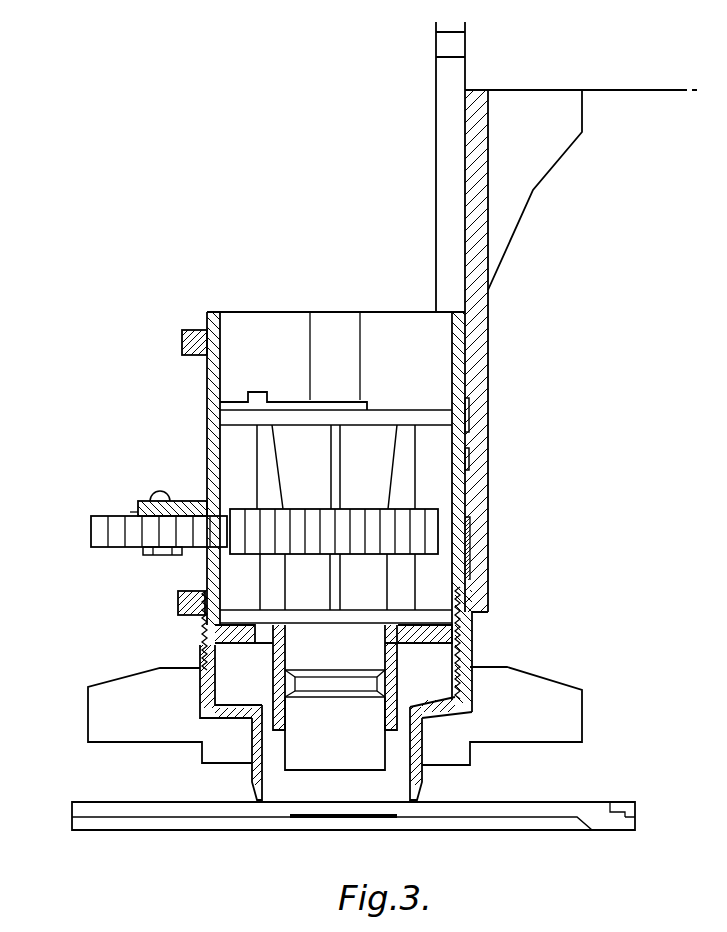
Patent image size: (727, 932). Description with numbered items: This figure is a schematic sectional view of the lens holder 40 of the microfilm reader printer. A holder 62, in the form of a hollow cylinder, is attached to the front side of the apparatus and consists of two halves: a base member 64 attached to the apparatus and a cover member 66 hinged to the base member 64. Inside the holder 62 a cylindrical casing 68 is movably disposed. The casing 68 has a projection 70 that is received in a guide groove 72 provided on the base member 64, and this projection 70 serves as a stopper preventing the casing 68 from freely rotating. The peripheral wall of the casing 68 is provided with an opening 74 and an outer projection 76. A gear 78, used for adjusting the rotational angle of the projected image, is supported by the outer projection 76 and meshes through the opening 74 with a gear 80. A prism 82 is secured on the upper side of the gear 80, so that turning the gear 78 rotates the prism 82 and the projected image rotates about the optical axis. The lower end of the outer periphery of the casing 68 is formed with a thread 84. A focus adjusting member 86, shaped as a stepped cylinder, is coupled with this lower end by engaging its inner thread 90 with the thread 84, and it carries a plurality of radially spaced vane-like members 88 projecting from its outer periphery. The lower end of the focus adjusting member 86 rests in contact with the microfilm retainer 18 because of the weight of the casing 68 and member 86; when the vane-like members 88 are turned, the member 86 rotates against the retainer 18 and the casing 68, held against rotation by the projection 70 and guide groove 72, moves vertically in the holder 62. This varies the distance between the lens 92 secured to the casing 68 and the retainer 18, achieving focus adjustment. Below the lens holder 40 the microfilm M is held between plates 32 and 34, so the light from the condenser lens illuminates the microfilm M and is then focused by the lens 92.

The microfilm retainer 18 is at (327, 817).
The plate 32 is at (170, 808).
The plate 34 is at (157, 823).
The microfilm M is at (362, 822).
The lens holder 40 is at (230, 262).
The holder 62 is at (493, 296).
The base member 64 is at (488, 355).
The cover member 66 is at (183, 330).
The casing 68 is at (460, 378).
The projection 70 is at (467, 446).
The guide groove 72 is at (469, 418).
The opening 74 is at (207, 548).
The outer projection 76 is at (191, 505).
The gear 78 is at (113, 525).
The gear 80 is at (425, 537).
The prism 82 is at (385, 488).
The thread 84 is at (472, 603).
The focus adjusting member 86 is at (205, 645).
The vane-like members 88 is at (570, 717).
The thread 90 is at (220, 636).
The lens 92 is at (322, 744).